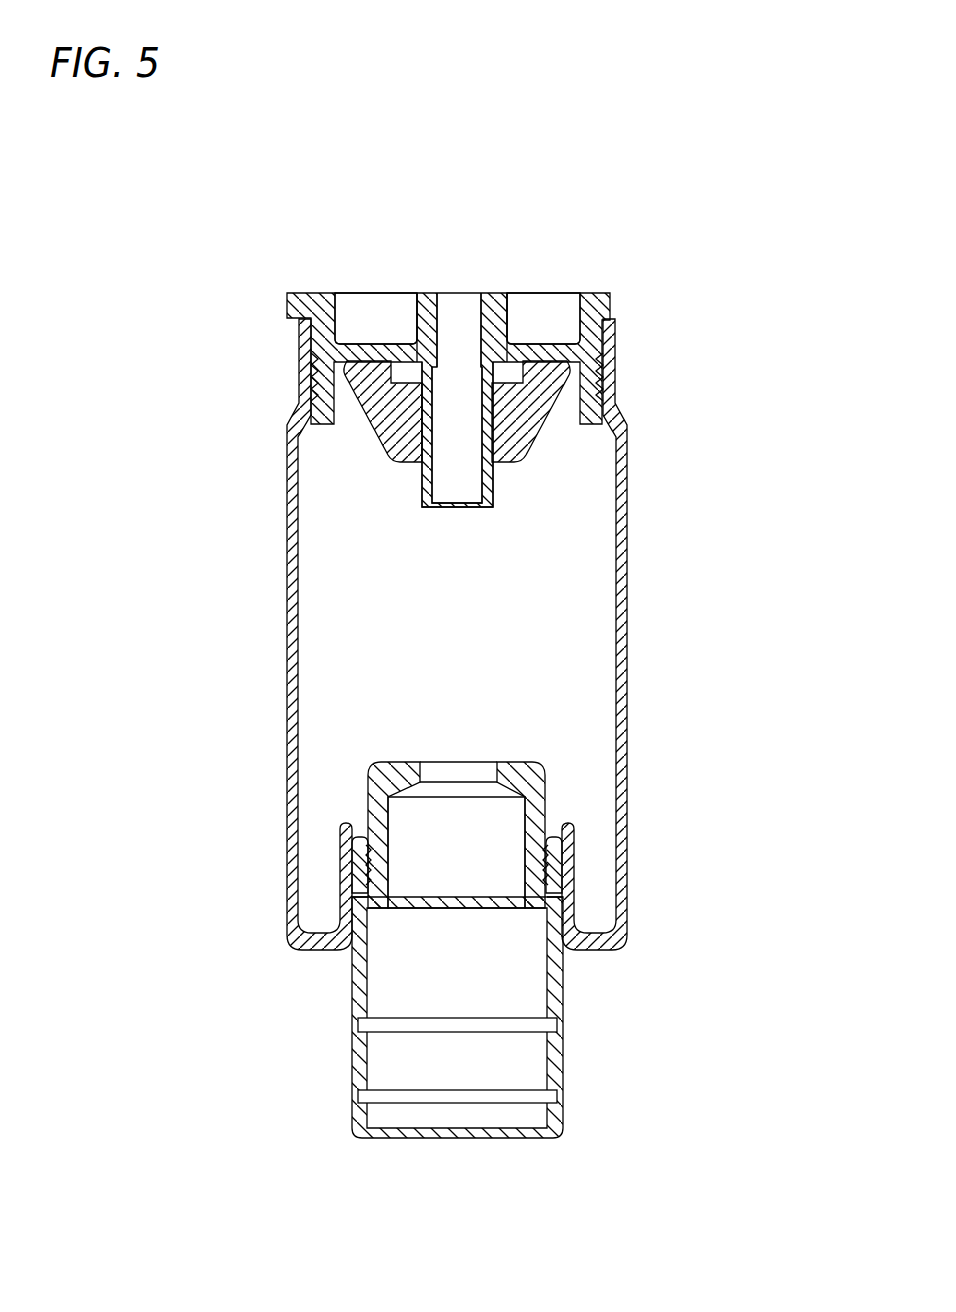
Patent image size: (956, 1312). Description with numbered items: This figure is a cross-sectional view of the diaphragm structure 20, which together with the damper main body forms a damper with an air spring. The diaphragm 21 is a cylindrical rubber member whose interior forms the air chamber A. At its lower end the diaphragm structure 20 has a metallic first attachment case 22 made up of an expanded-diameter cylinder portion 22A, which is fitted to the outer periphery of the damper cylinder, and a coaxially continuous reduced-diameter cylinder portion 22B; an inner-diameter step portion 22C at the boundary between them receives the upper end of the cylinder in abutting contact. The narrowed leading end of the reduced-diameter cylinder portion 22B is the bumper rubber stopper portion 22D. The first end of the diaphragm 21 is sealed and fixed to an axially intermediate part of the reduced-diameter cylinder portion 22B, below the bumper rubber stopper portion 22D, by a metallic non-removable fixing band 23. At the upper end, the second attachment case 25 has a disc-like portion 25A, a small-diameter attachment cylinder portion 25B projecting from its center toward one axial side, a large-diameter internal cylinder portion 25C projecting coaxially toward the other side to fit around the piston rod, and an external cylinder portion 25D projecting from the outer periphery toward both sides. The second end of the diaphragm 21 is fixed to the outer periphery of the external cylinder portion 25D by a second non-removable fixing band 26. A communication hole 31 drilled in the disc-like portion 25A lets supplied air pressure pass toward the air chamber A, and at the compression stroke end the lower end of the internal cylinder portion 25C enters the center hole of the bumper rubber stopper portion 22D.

The diaphragm structure 20 is at (216, 447).
The diaphragm 21 is at (286, 625).
The first attachment case 22 is at (533, 761).
The expanded-diameter cylinder portion 22A is at (352, 1058).
The reduced-diameter cylinder portion 22B is at (365, 812).
The inner-diameter step portion 22C is at (378, 917).
The bumper rubber stopper portion 22D is at (405, 760).
The non-removable fixing band 23 is at (352, 846).
The second attachment case 25 is at (598, 293).
The disc-like portion 25A is at (370, 320).
The attachment cylinder portion 25B is at (403, 320).
The internal cylinder portion 25C is at (420, 480).
The external cylinder portion 25D is at (328, 412).
The non-removable fixing band 26 is at (302, 372).
The communication hole 31 is at (510, 320).
The air chamber A is at (553, 617).